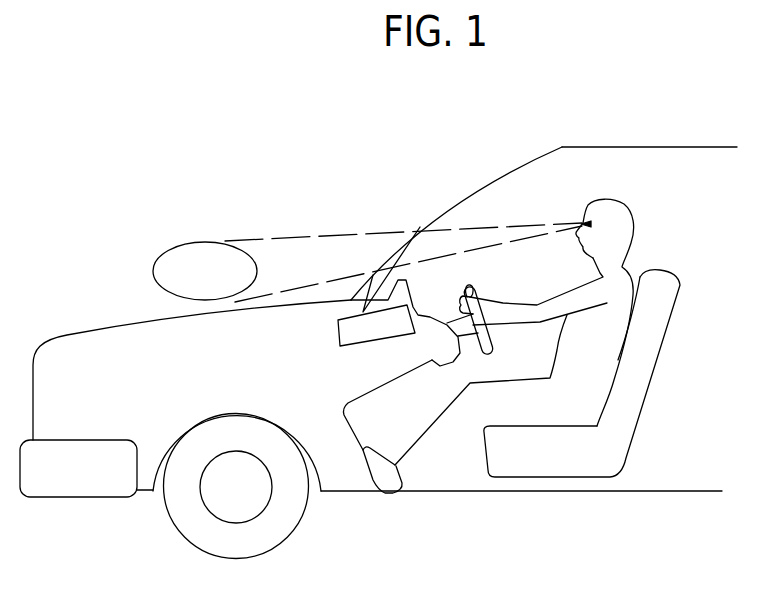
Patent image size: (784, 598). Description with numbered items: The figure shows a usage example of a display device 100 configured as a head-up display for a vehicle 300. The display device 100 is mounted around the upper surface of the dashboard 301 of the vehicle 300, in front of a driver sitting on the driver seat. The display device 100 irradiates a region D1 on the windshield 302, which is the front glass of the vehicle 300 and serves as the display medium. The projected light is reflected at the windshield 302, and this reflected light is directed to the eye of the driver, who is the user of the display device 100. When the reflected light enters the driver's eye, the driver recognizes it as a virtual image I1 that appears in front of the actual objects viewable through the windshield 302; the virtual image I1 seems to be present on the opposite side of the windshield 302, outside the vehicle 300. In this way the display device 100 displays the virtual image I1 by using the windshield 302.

The vehicle 300 is at (580, 147).
The dashboard 301 is at (430, 357).
The windshield 302 is at (521, 169).
The display device 100 is at (338, 355).
The region D1 is at (394, 257).
The virtual image I1 is at (183, 243).